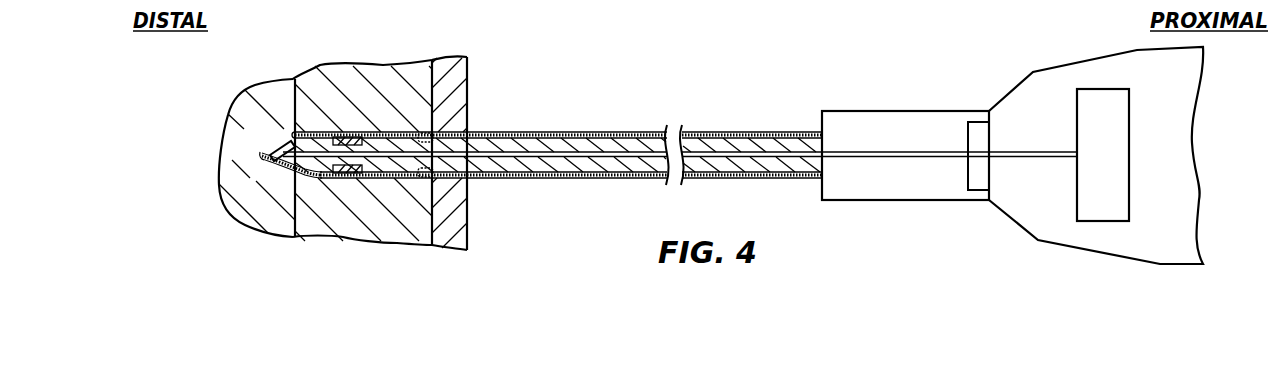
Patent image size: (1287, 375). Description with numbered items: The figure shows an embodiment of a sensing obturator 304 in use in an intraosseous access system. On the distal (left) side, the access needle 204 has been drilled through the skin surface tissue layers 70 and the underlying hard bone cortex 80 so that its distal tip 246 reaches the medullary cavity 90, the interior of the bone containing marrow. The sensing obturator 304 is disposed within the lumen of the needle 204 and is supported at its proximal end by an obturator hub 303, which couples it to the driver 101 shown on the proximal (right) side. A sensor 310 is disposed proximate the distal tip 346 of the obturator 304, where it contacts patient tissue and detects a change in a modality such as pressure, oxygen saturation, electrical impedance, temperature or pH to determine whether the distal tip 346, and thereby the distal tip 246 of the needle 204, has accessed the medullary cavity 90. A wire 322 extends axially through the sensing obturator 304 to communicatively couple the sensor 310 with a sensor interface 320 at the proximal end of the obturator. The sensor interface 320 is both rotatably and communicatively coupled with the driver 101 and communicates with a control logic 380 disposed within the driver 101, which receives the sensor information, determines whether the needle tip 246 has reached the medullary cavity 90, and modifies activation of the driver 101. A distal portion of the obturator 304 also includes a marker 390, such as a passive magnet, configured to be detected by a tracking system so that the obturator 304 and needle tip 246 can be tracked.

The skin surface tissue layers 70 is at (461, 101).
The bone cortex 80 is at (374, 101).
The medullary cavity 90 is at (281, 118).
The driver 101 is at (1030, 66).
The access needle 204 is at (517, 180).
The distal tip of the needle 246 is at (263, 162).
The obturator hub 303 is at (866, 118).
The sensing obturator 304 is at (633, 143).
The sensor 310 is at (272, 152).
The sensor interface 320 is at (978, 128).
The wire 322 is at (590, 158).
The distal tip of the obturator 346 is at (262, 157).
The control logic 380 is at (1112, 105).
The marker 390 is at (357, 174).